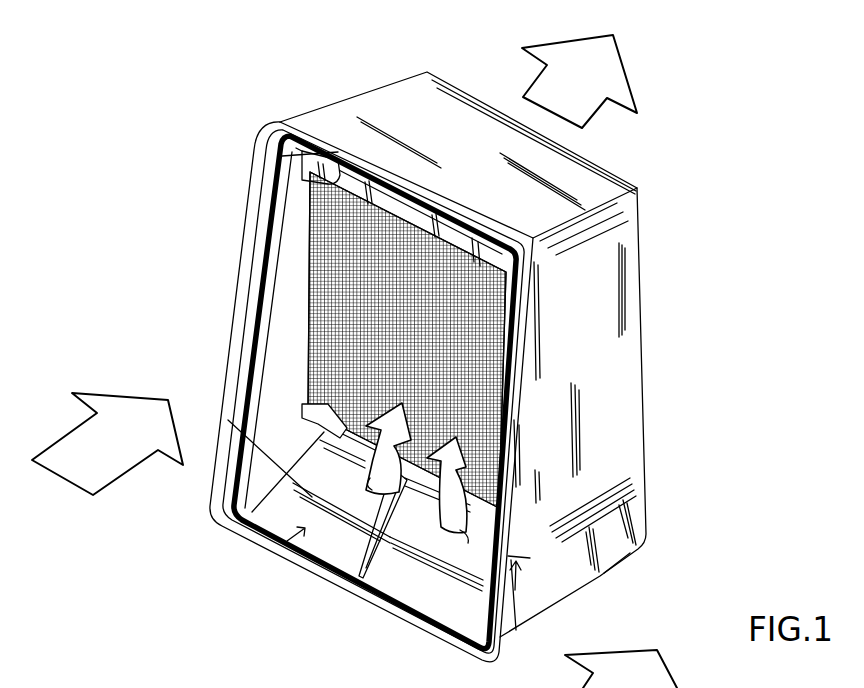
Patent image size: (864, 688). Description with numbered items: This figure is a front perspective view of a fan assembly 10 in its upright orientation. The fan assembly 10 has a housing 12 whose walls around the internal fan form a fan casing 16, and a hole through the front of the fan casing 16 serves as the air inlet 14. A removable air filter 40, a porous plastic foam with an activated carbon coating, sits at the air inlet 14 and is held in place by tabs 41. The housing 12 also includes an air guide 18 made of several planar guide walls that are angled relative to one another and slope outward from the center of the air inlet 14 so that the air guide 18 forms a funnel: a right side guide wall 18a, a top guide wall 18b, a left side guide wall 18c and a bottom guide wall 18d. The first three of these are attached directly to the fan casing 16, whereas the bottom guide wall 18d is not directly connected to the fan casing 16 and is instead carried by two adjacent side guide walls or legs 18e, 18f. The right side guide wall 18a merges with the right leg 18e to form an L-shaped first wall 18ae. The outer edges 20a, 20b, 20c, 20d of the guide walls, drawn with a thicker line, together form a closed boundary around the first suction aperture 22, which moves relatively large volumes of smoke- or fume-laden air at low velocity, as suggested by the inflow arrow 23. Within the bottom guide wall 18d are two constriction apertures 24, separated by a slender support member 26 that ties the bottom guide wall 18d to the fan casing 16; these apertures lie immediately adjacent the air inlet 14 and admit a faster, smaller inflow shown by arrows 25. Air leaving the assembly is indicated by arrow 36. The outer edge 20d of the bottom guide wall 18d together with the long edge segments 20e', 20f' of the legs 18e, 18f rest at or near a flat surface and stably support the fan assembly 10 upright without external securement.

The fan assembly 10 is at (718, 128).
The housing 12 is at (437, 344).
The air inlet 14 is at (293, 294).
The fan casing 16 is at (447, 80).
The air guide 18 is at (280, 124).
The right side guide wall 18a is at (524, 452).
The top guide wall 18b is at (385, 150).
The left side guide wall 18c is at (291, 223).
The bottom guide wall 18d is at (296, 488).
The right side guide wall (right leg) 18e is at (601, 542).
The L-shaped first wall 18ae is at (548, 584).
The left side guide wall (left leg) 18f is at (331, 463).
The outer edge of right side guide wall 20a is at (503, 537).
The outer edge of top guide wall 20b is at (336, 158).
The outer edge of left side guide wall 20c is at (260, 268).
The outer edge of bottom guide wall 20d is at (307, 563).
The long segment of right leg outer edge 20e' is at (664, 564).
The long segment of left leg outer edge 20f' is at (199, 562).
The first suction aperture 22 is at (220, 364).
The air inflow arrow 23 is at (133, 398).
The constriction apertures 24 is at (372, 528).
The air inflow arrows 25 is at (346, 507).
The slender support member 26 is at (352, 530).
The air outflow arrow 36 is at (632, 76).
The air filter 40 is at (312, 372).
The tabs 41 is at (282, 156).